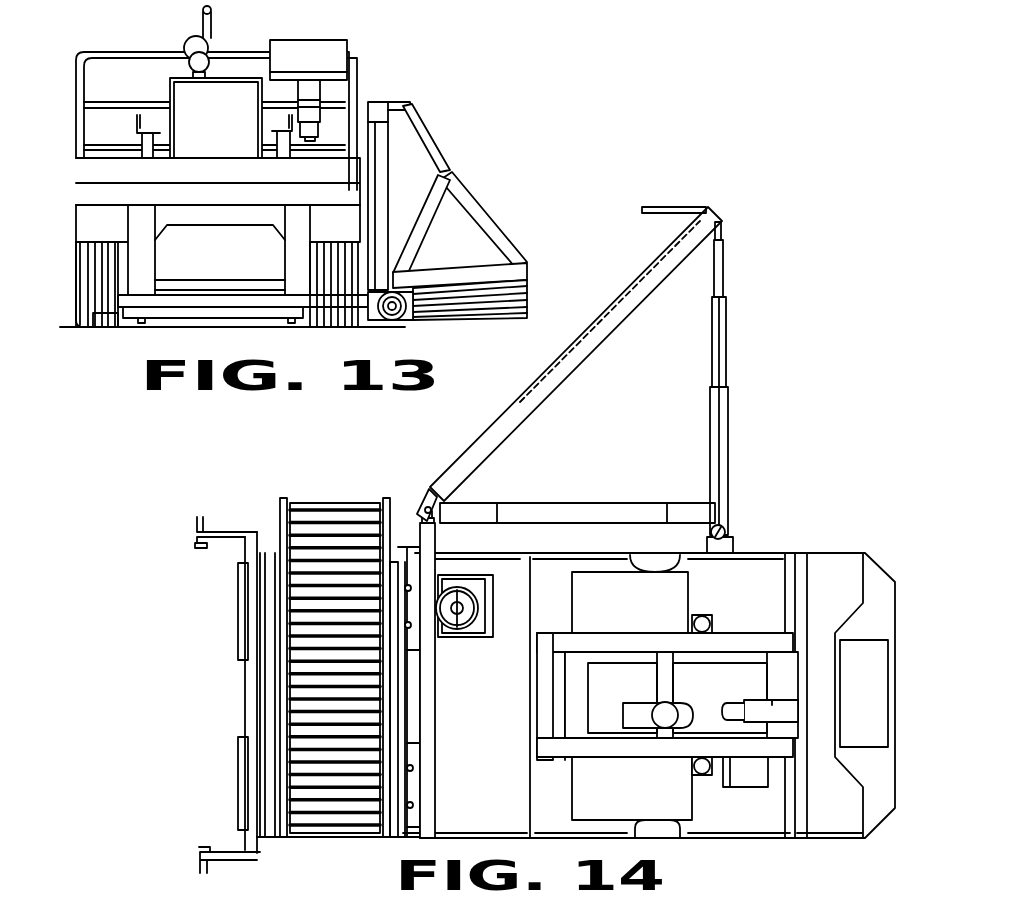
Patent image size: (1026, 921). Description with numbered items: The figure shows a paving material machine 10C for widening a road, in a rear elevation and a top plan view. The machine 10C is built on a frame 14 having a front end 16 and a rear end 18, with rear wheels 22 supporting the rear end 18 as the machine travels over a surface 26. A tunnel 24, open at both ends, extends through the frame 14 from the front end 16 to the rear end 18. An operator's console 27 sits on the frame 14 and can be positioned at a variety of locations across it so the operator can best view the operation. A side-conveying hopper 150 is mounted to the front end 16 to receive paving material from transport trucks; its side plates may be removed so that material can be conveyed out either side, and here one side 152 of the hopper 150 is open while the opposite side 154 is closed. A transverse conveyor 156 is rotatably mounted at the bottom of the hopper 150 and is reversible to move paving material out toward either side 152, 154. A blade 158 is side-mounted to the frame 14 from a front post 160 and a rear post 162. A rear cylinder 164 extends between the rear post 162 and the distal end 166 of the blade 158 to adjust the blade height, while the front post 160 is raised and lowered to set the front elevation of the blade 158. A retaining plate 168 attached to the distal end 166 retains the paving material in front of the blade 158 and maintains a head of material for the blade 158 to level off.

In FIG. 13, the paving material machine for widening a road 10C is at (98, 42).
In FIG. 14, the paving material machine for widening a road 10C is at (266, 499).
In FIG. 13, the frame 14 is at (83, 161).
In FIG. 14, the frame 14 is at (585, 562).
In FIG. 14, the front end 16 is at (417, 545).
In FIG. 13, the rear end 18 is at (125, 194).
In FIG. 14, the rear end 18 is at (896, 586).
In FIG. 13, the rear wheels 22 is at (85, 328).
In FIG. 13, the tunnel 24 is at (226, 255).
In FIG. 13, the surface 26 is at (188, 326).
In FIG. 13, the operator's console 27 is at (305, 66).
In FIG. 14, the operator's console 27 is at (463, 578).
In FIG. 14, the side-conveying hopper 150 is at (278, 528).
In FIG. 14, the side of the hopper 152 is at (345, 553).
In FIG. 14, the opposite side of the hopper 154 is at (328, 838).
In FIG. 14, the transverse conveyor 156 is at (336, 503).
In FIG. 13, the blade 158 is at (478, 290).
In FIG. 14, the blade 158 is at (647, 278).
In FIG. 14, the front post 160 is at (428, 505).
In FIG. 13, the rear post 162 is at (388, 122).
In FIG. 14, the rear post 162 is at (722, 527).
In FIG. 13, the rear cylinder 164 is at (440, 152).
In FIG. 14, the rear cylinder 164 is at (725, 405).
In FIG. 14, the distal end of the blade 166 is at (722, 222).
In FIG. 14, the retaining plate 168 is at (672, 207).